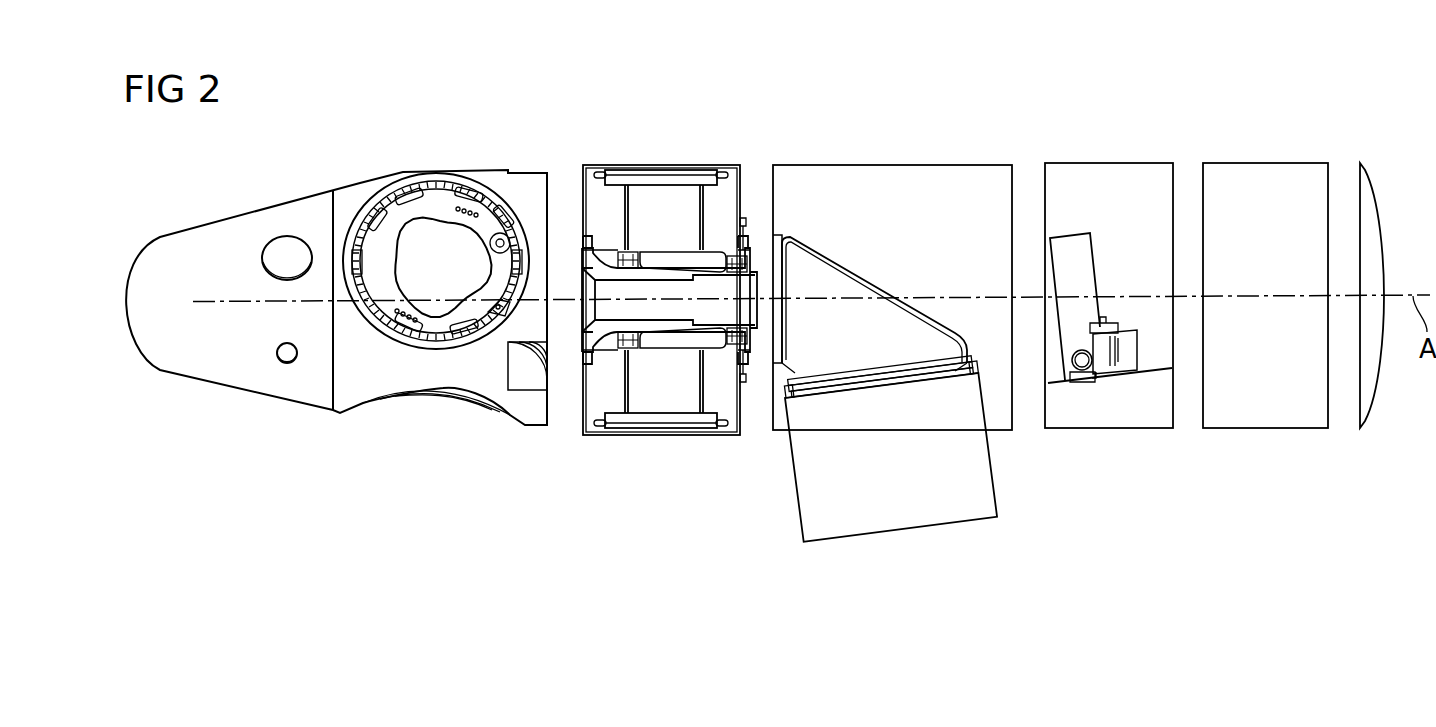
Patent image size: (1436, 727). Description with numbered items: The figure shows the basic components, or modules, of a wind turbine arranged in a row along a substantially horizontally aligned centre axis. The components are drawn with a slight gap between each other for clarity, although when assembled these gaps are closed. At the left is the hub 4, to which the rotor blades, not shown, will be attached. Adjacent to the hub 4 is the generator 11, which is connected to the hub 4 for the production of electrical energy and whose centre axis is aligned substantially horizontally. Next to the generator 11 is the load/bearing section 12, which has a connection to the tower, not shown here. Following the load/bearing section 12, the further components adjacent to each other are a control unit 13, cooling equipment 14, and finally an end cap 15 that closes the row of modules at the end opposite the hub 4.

The hub 4 is at (285, 203).
The generator 11 is at (664, 165).
The load/bearing section 12 is at (893, 165).
The control unit 13 is at (1108, 163).
The cooling equipment 14 is at (1265, 163).
The end cap 15 is at (1372, 175).